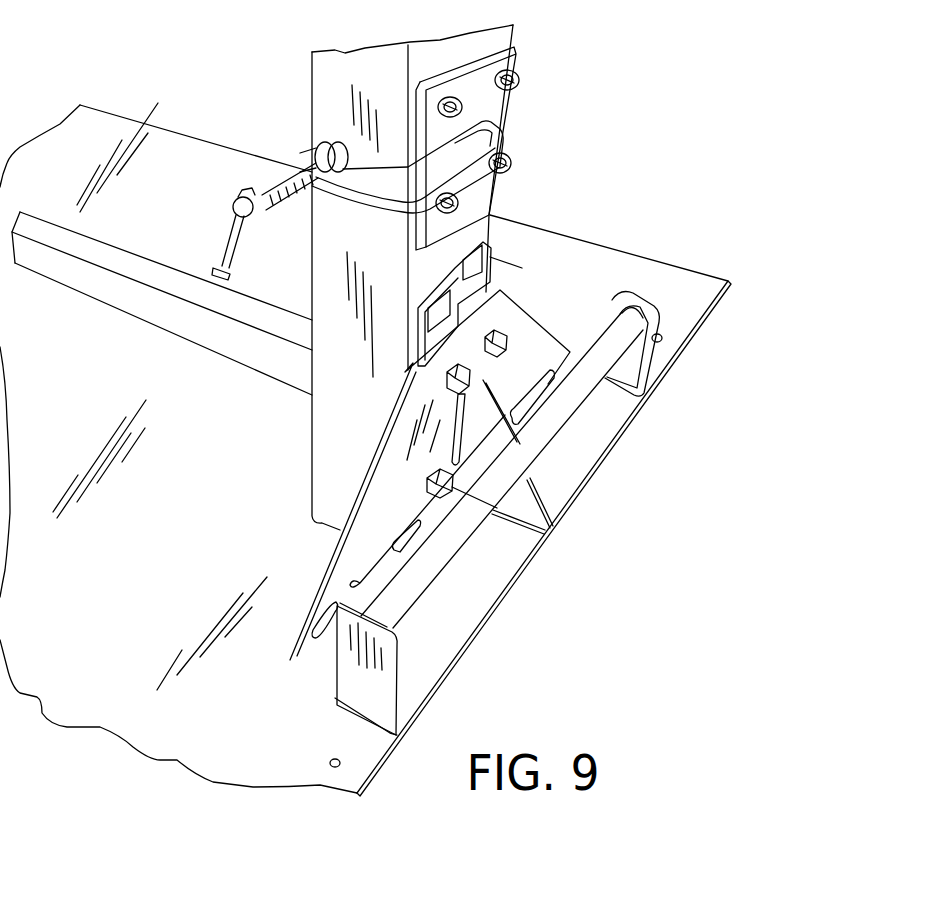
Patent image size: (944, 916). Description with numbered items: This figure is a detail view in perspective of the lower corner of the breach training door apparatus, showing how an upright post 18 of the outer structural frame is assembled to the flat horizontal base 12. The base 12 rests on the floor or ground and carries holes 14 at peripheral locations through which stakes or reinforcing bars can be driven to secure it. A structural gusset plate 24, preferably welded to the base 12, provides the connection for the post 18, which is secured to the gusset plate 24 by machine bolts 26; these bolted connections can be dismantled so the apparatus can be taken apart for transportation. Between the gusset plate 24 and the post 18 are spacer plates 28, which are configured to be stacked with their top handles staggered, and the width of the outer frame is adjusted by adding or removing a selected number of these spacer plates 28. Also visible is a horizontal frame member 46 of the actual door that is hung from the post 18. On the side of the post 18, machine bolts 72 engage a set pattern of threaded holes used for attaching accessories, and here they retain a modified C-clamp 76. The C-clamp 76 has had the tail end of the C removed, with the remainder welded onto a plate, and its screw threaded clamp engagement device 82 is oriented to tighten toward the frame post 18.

The base 12 is at (623, 263).
The holes 14 is at (660, 334).
The upright post 18 is at (365, 80).
The structural gusset plate 24 is at (382, 500).
The machine bolts 26 is at (467, 382).
The spacer plates 28 is at (457, 287).
The lower horizontal frame member 46 is at (0, 18).
The machine bolts 72 is at (462, 108).
The modified C-clamp 76 is at (297, 145).
The screw threaded clamp engagement device 82 is at (278, 205).